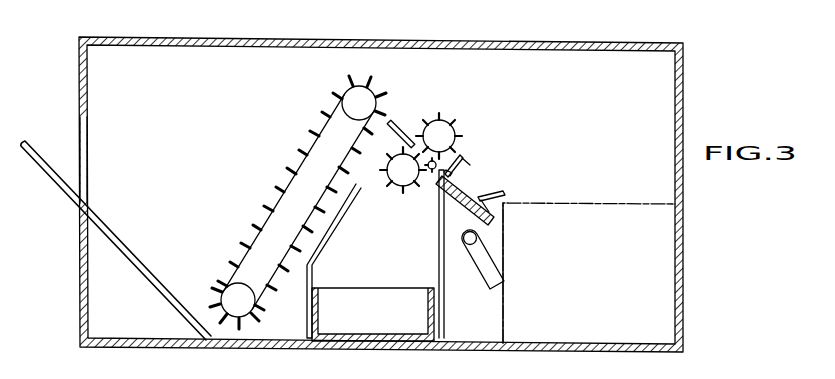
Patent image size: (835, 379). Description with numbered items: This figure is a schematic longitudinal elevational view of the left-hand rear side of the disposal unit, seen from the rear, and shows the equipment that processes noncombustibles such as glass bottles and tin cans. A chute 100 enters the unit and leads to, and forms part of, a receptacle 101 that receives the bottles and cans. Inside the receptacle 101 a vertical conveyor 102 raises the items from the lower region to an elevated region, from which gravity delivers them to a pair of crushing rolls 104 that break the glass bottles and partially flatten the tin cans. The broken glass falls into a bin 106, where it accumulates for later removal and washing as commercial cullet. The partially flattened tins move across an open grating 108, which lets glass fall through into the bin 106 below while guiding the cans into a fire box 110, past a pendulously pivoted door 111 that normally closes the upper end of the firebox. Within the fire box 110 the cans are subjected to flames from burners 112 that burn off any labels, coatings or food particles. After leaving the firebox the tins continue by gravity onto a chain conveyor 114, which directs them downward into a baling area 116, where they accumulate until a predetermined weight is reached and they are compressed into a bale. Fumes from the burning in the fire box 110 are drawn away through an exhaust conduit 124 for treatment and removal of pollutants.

The chute 100 is at (84, 200).
The receptacle 101 is at (190, 140).
The vertical conveyor 102 is at (270, 172).
The crushing rolls 104 is at (415, 124).
The bin 106 is at (380, 296).
The open grating 108 is at (433, 172).
The fire box 110 is at (503, 190).
The pendulously pivoted door 111 is at (470, 157).
The burners 112 is at (510, 205).
The chain conveyor 114 is at (483, 277).
The baling area 116 is at (602, 265).
The exhaust conduit 124 is at (474, 162).